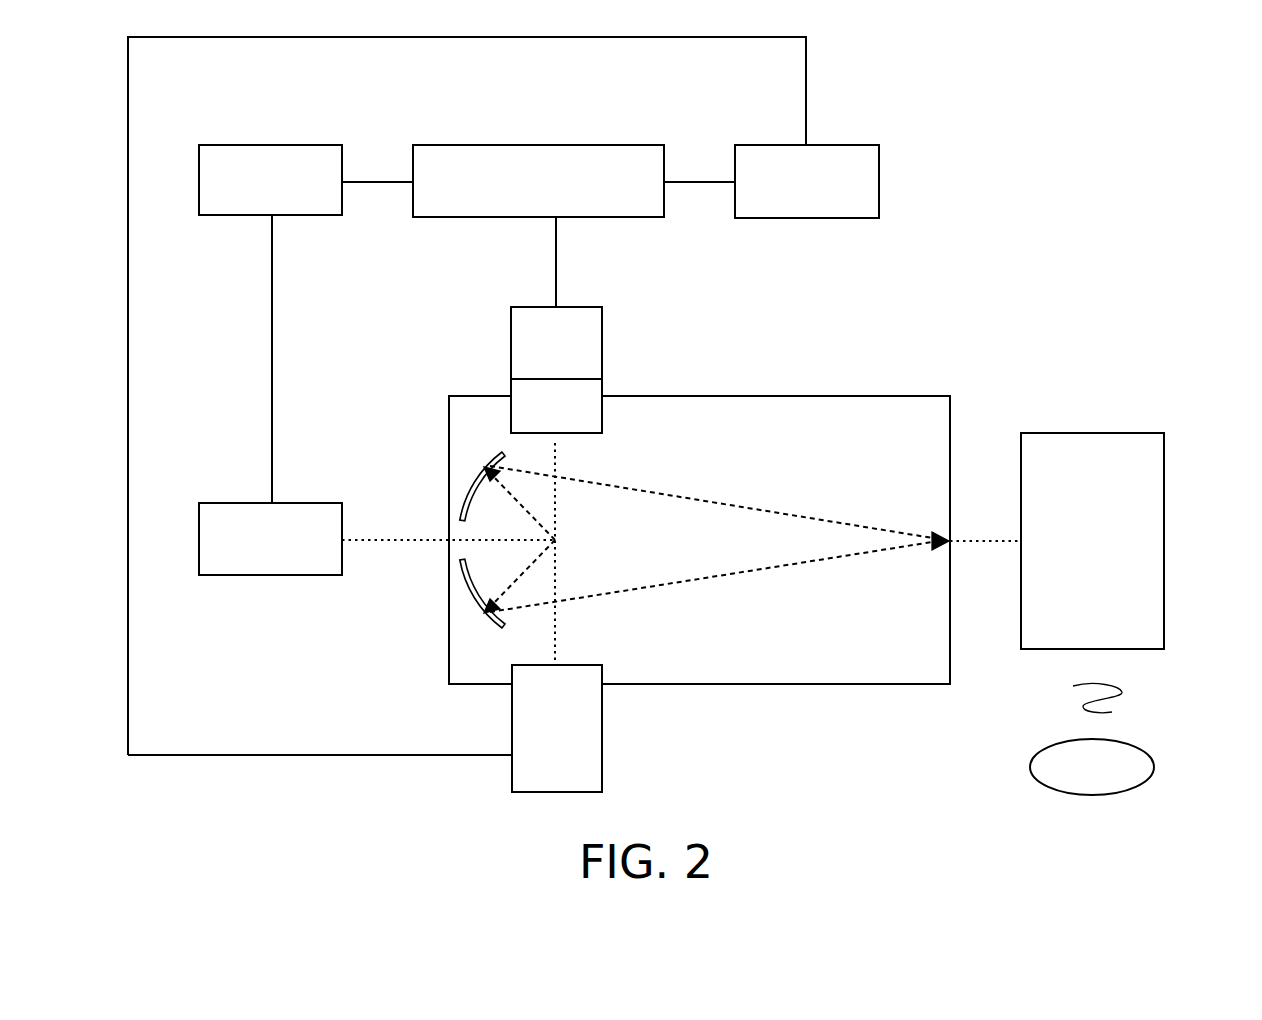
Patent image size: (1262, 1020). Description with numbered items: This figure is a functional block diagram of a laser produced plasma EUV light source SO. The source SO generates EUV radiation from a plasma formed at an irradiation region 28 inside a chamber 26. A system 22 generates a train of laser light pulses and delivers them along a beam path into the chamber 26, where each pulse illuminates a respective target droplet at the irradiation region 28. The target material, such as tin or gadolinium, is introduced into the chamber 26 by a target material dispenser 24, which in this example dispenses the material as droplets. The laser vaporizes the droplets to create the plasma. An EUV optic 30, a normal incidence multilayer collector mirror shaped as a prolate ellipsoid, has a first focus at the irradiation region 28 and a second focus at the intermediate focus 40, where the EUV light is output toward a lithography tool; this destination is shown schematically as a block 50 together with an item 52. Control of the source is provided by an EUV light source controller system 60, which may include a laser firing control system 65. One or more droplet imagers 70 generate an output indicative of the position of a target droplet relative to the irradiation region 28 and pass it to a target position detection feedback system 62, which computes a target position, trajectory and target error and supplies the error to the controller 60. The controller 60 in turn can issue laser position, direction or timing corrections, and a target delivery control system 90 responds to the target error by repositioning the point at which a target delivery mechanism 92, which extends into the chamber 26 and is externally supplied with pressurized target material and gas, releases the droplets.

The system for generating a train of light pulses 22 is at (270, 573).
The target material dispenser 24 is at (582, 361).
The chamber 26 is at (681, 540).
The irradiation region 28 is at (558, 540).
The EUV optic 30 is at (490, 467).
The intermediate focus 40 is at (842, 521).
The lithographic apparatus 50 is at (1163, 578).
The substrate 52 is at (1153, 761).
The EUV light source controller system 60 is at (555, 145).
The target position detection feedback system 62 is at (845, 145).
The laser firing control system 65 is at (268, 145).
The droplet imager 70 is at (602, 765).
The target delivery control system 90 is at (511, 341).
The target delivery mechanism 92 is at (602, 416).
The source SO is at (661, 555).